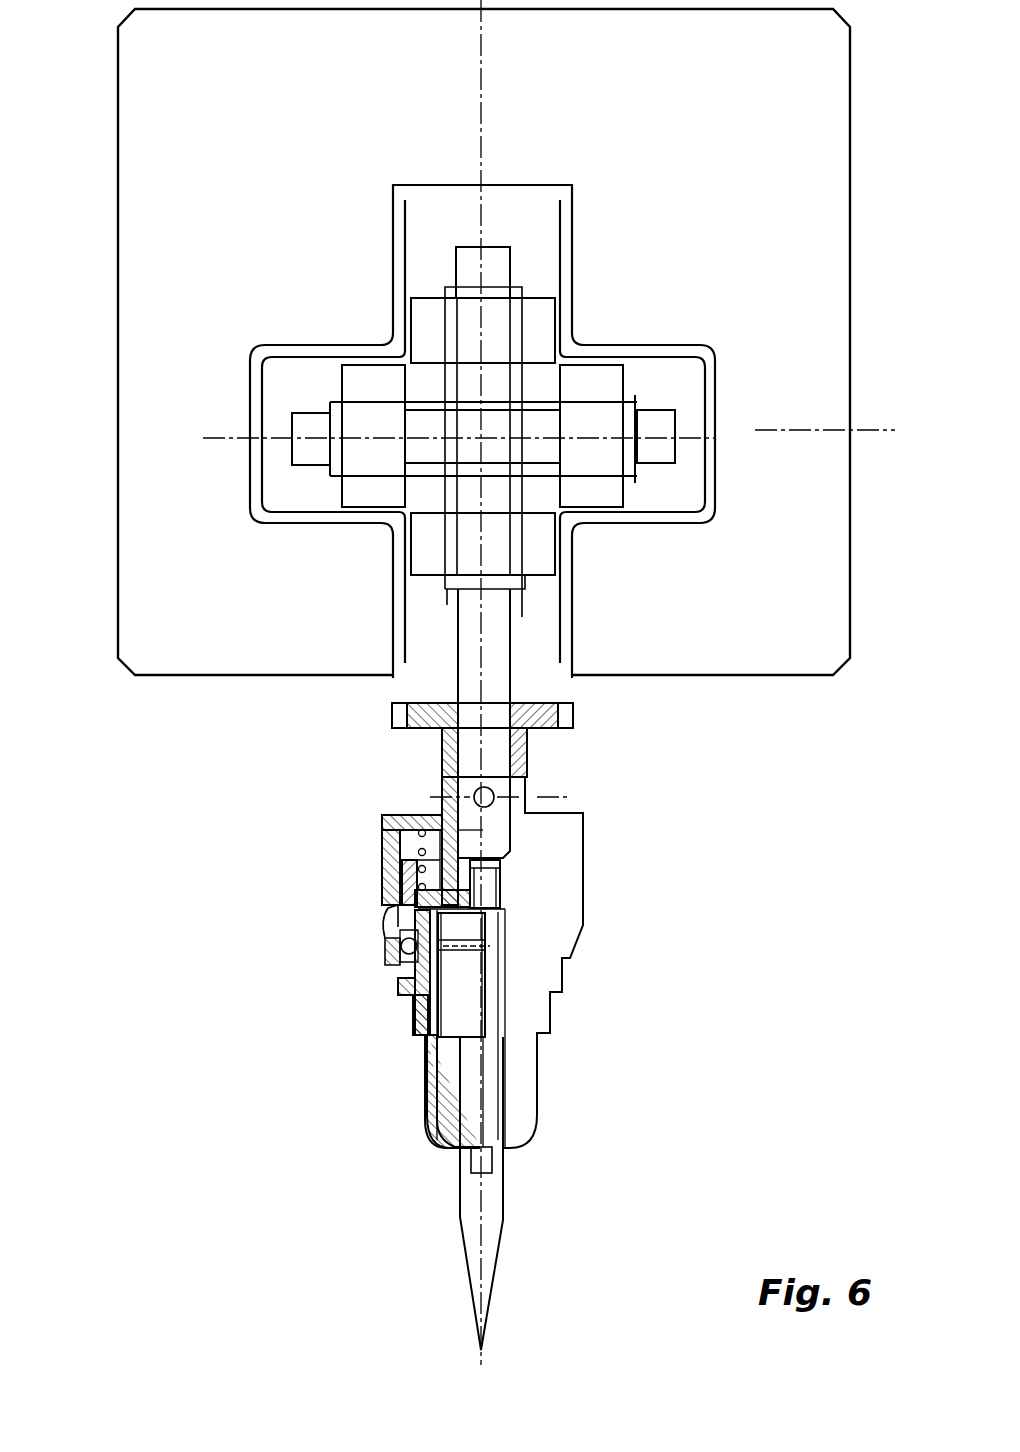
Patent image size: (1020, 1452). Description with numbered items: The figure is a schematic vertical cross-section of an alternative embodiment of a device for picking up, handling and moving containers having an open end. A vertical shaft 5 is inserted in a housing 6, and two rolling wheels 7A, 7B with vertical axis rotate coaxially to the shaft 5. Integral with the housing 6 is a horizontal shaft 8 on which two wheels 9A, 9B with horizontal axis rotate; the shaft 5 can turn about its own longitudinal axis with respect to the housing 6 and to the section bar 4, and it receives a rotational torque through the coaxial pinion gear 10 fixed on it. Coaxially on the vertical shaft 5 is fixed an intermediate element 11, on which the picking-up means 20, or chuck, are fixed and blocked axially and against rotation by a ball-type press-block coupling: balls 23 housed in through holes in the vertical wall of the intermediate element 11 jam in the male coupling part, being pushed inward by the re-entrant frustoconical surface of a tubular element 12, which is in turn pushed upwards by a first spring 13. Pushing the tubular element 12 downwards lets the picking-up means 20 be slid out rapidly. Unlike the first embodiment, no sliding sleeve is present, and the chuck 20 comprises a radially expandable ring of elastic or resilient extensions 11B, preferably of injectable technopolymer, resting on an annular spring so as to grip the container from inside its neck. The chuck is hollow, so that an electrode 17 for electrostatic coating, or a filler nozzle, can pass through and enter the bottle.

The section bar 4 is at (118, 438).
The vertical shaft 5 is at (458, 680).
The housing 6 is at (523, 292).
The rolling wheel 7A is at (411, 577).
The rolling wheel 7B is at (423, 298).
The horizontal shaft 8 is at (675, 425).
The wheel 9A is at (357, 365).
The wheel 9B is at (623, 380).
The pinion gear 10 is at (577, 712).
The intermediate element 11 is at (460, 880).
The elastic extensions 11B is at (437, 1147).
The tubular element 12 is at (402, 815).
The first spring 13 is at (420, 850).
The electrode 17 is at (492, 1277).
The picking-up means 20 is at (413, 1023).
The balls 23 is at (400, 950).